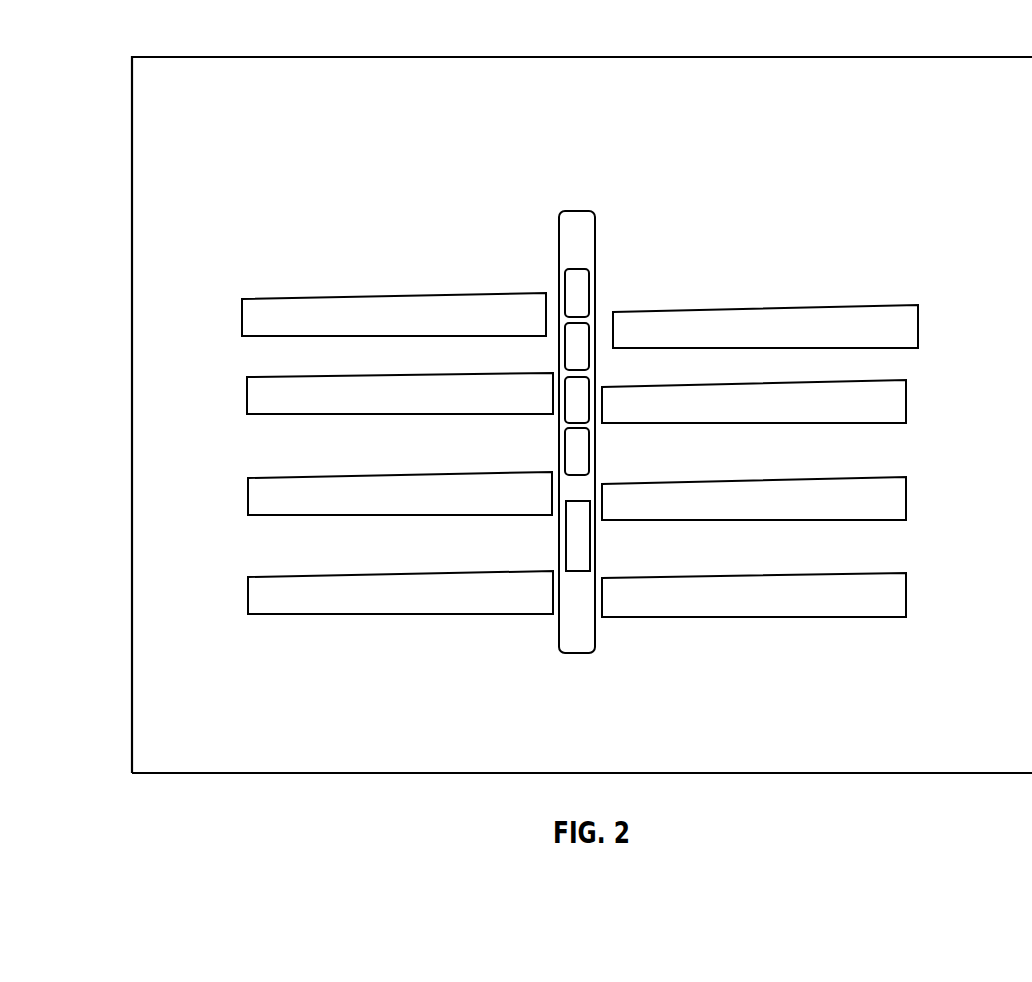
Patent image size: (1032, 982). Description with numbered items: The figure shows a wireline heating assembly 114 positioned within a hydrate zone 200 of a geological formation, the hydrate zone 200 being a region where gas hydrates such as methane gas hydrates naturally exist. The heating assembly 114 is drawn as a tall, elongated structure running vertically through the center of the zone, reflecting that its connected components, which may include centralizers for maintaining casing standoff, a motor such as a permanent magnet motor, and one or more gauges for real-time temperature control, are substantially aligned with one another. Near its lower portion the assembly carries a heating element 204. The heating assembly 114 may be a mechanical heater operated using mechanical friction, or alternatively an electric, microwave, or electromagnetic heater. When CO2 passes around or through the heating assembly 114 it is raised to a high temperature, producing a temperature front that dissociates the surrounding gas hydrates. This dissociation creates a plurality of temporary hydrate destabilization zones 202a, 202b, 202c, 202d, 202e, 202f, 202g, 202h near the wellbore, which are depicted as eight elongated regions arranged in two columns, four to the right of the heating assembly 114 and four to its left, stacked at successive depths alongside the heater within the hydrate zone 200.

The hydrate zone 200 is at (198, 55).
The heating assembly 114 is at (577, 224).
The heating element 204 is at (582, 531).
The temporary hydrate destabilization zone 202a is at (772, 316).
The temporary hydrate destabilization zone 202b is at (897, 400).
The temporary hydrate destabilization zone 202c is at (895, 505).
The temporary hydrate destabilization zone 202d is at (858, 603).
The temporary hydrate destabilization zone 202e is at (406, 306).
The temporary hydrate destabilization zone 202f is at (253, 397).
The temporary hydrate destabilization zone 202g is at (258, 498).
The temporary hydrate destabilization zone 202h is at (441, 598).